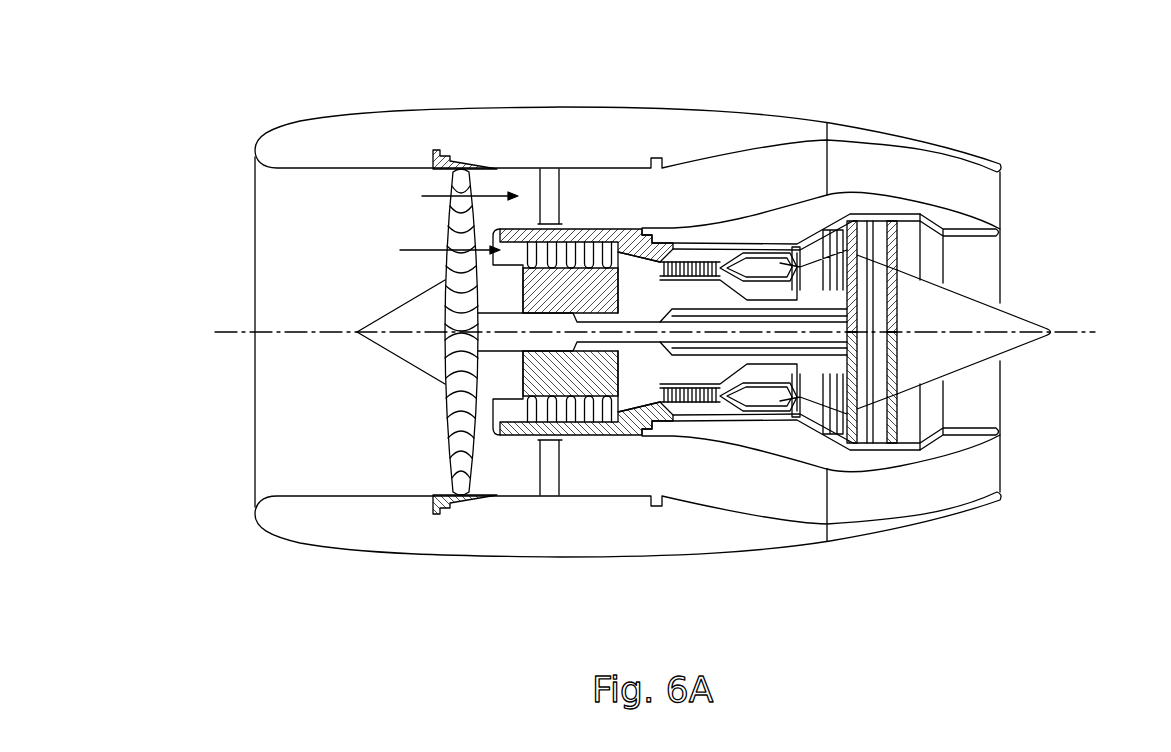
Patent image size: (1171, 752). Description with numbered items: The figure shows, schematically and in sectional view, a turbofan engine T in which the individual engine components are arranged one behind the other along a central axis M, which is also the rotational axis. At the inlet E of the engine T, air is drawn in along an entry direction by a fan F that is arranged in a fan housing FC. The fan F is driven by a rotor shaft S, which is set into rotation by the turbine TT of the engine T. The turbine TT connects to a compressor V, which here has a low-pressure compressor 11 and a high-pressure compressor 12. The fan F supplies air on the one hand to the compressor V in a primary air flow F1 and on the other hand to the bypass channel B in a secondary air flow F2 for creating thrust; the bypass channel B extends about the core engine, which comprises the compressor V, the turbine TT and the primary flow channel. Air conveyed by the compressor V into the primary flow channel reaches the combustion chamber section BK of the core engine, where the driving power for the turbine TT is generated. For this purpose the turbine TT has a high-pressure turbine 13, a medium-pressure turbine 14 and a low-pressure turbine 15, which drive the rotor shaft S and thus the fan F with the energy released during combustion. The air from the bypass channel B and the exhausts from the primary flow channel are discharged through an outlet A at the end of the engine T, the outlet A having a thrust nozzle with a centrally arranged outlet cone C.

The turbofan engine T is at (975, 110).
The inlet E is at (268, 395).
The fan housing FC is at (445, 156).
The fan F is at (447, 432).
The primary air flow F1 is at (431, 251).
The secondary air flow F2 is at (450, 197).
The low-pressure compressor 11 is at (573, 214).
The high-pressure compressor 12 is at (670, 243).
The bypass channel B is at (770, 190).
The turbine TT is at (846, 188).
The rotor shaft S is at (700, 352).
The combustion chamber section BK is at (747, 403).
The high-pressure turbine 13 is at (811, 427).
The medium-pressure turbine 14 is at (841, 427).
The low-pressure turbine 15 is at (920, 447).
The outlet A is at (992, 241).
The outlet cone C is at (1008, 348).
The central axis M is at (1087, 333).
The compressor V is at (584, 475).